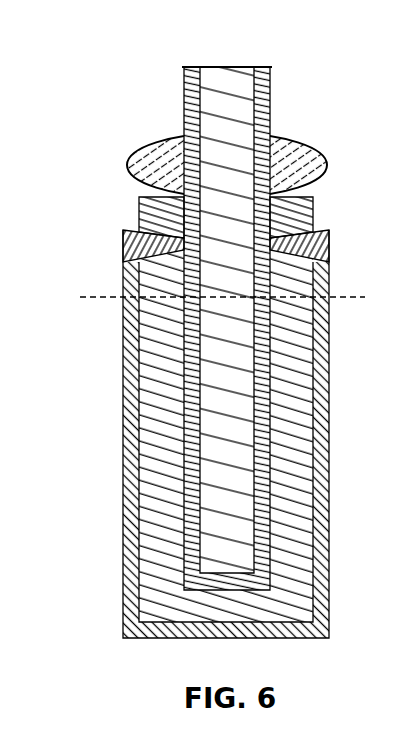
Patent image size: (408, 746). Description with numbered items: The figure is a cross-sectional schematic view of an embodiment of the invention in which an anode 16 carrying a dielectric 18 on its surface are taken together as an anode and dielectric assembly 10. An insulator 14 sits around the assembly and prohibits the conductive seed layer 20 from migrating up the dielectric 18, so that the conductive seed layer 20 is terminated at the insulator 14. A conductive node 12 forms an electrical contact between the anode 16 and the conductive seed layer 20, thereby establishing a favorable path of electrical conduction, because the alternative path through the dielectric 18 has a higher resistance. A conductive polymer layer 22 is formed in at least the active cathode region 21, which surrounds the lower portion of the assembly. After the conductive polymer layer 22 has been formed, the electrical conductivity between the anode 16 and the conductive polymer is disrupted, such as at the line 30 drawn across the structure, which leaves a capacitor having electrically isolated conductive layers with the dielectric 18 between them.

The anode and dielectric assembly 10 is at (273, 55).
The conductive node 12 is at (124, 242).
The insulator 14 is at (148, 158).
The anode 16 is at (230, 108).
The dielectric 18 is at (197, 118).
The conductive seed layer 20 is at (292, 440).
The active cathode region 21 is at (72, 297).
The conductive polymer layer 22 is at (313, 497).
The line 30 is at (346, 297).